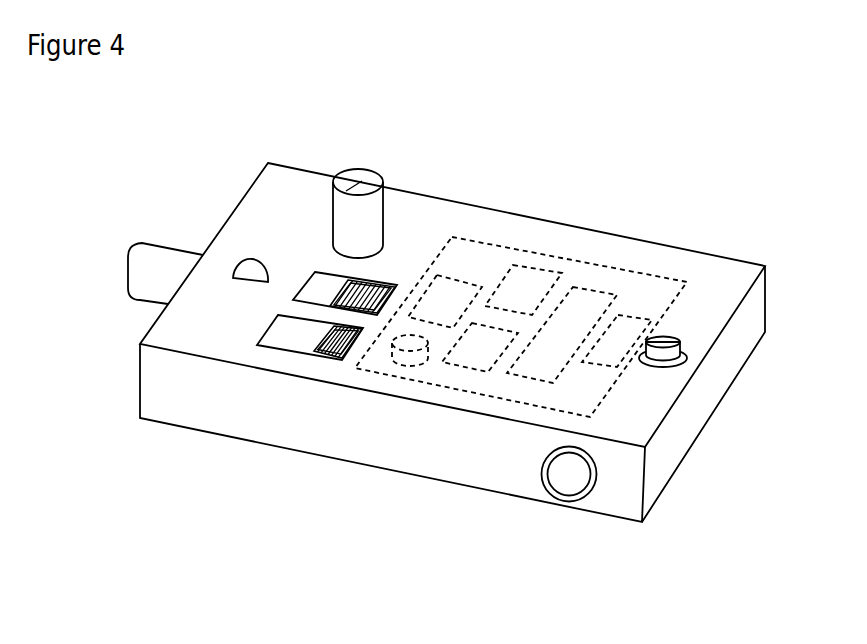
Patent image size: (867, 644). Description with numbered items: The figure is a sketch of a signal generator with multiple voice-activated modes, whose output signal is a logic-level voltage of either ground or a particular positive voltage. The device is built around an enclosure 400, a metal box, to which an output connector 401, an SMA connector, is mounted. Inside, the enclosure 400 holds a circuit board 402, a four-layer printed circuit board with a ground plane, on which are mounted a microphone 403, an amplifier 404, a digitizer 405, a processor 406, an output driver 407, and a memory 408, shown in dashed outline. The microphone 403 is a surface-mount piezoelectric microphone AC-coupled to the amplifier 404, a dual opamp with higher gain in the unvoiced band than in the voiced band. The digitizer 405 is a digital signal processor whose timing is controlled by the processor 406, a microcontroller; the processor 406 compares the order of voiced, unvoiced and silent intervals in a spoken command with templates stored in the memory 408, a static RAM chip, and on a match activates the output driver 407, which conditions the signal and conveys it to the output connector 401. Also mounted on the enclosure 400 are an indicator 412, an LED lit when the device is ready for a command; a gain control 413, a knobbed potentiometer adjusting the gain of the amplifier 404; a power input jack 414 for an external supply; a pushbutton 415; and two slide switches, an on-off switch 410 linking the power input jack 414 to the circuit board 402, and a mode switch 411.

The enclosure 400 is at (241, 200).
The output connector 401 is at (157, 245).
The circuit board 402 is at (452, 237).
The microphone 403 is at (392, 358).
The amplifier 404 is at (458, 280).
The digitizer 405 is at (538, 268).
The processor 406 is at (590, 288).
The output driver 407 is at (630, 312).
The memory 408 is at (460, 370).
The on-off switch 410 is at (263, 332).
The mode switch 411 is at (295, 292).
The indicator 412 is at (255, 255).
The gain control 413 is at (360, 169).
The power input jack 414 is at (547, 480).
The pushbutton 415 is at (668, 362).